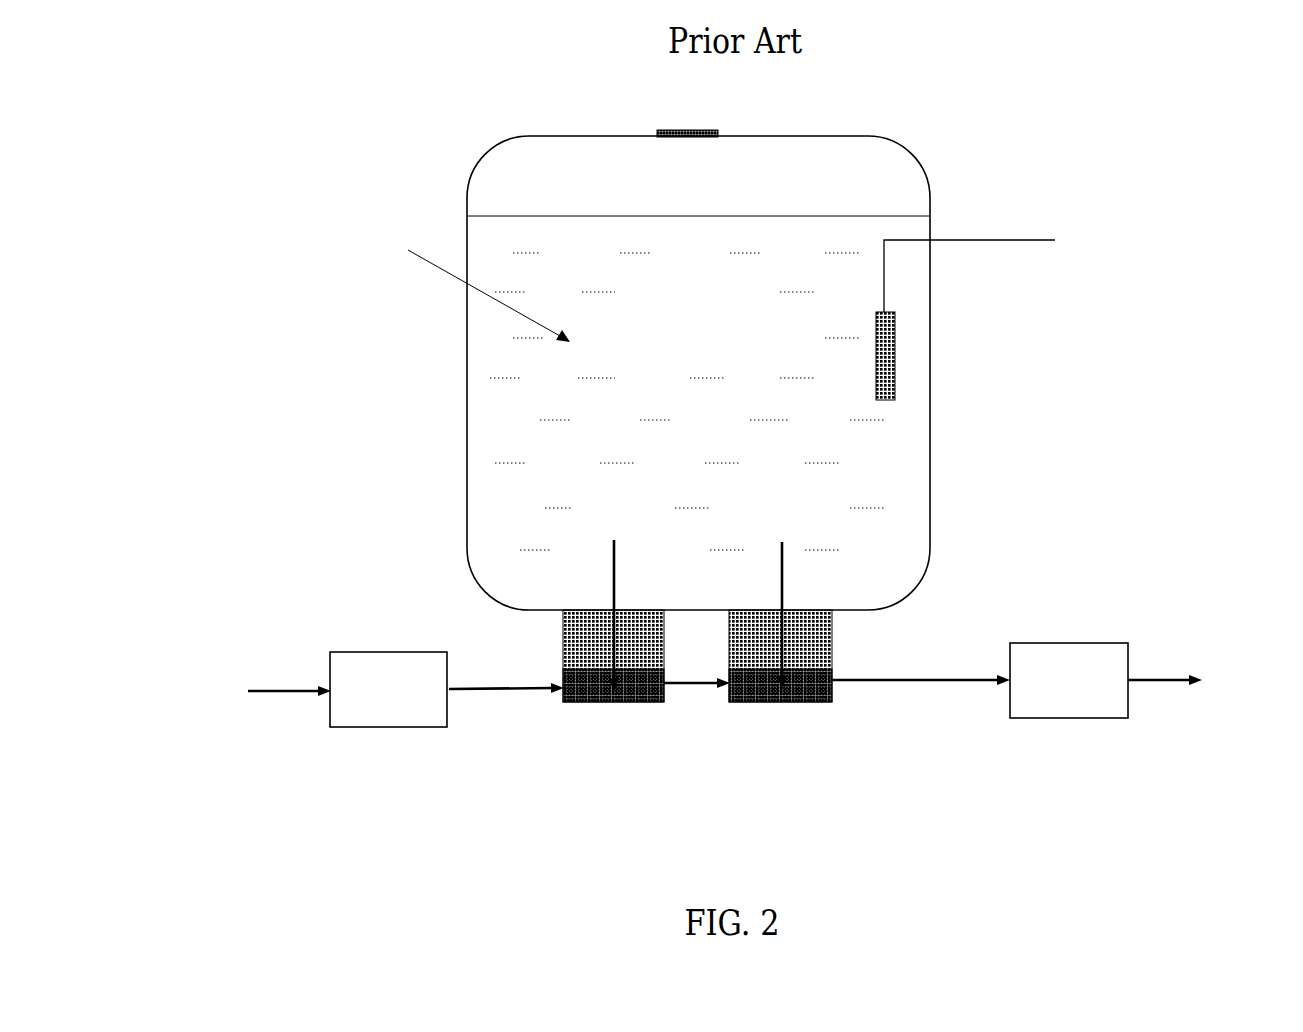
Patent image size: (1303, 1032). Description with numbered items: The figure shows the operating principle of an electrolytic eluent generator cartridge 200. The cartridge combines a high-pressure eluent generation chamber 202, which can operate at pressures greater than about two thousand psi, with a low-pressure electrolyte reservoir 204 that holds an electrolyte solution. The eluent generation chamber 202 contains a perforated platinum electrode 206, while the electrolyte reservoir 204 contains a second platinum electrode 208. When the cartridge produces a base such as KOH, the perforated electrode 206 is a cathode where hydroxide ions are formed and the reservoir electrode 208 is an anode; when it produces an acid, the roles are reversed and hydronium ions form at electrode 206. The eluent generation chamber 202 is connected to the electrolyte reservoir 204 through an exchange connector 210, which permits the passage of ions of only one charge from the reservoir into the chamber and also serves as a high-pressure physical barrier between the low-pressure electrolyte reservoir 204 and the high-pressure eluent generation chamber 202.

The electrolytic eluent generator cartridge 200 is at (1046, 96).
The eluent generation chamber 202 is at (578, 682).
The electrolyte reservoir 204 is at (611, 383).
The perforated platinum electrode 206 is at (613, 702).
The Pt electrode 208 is at (977, 290).
The exchange connector 210 is at (833, 640).